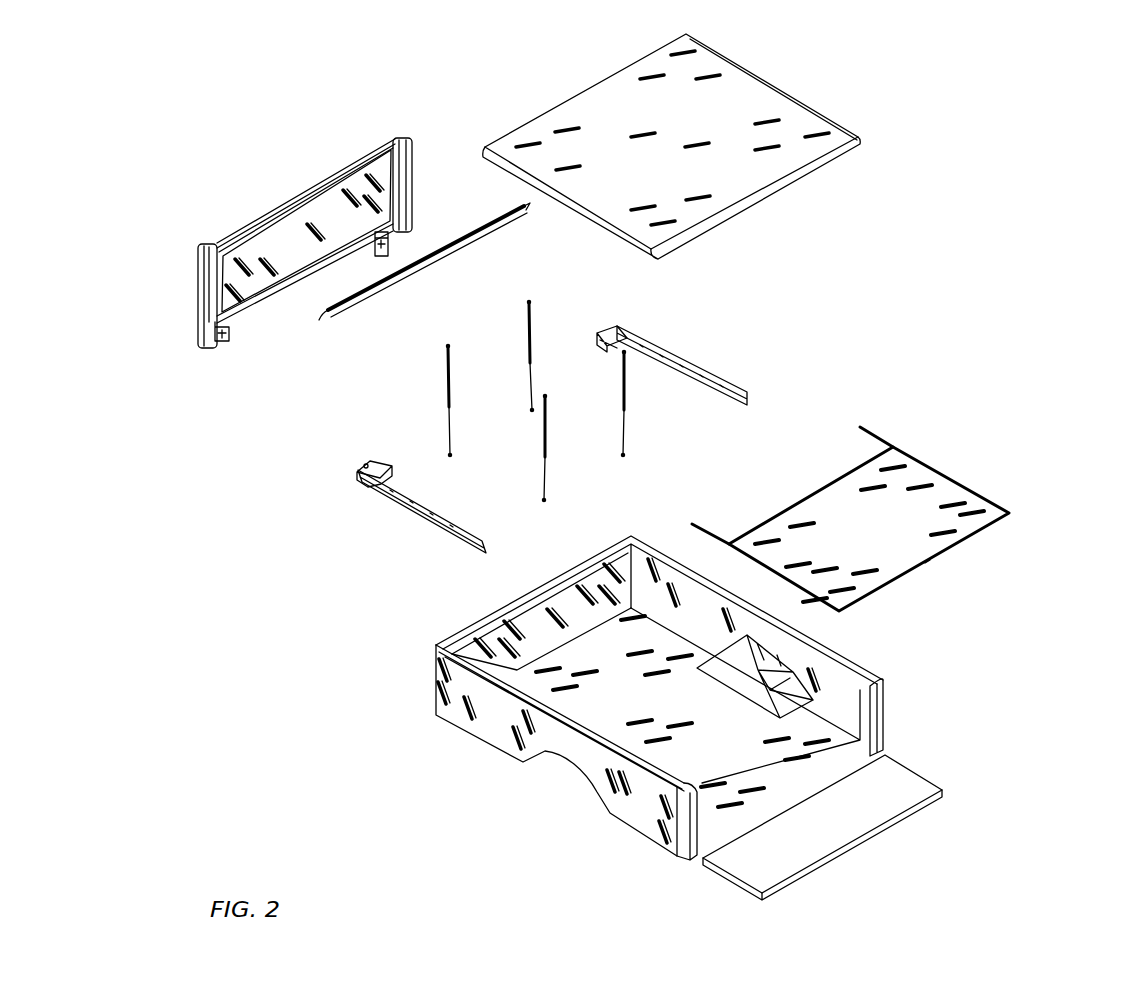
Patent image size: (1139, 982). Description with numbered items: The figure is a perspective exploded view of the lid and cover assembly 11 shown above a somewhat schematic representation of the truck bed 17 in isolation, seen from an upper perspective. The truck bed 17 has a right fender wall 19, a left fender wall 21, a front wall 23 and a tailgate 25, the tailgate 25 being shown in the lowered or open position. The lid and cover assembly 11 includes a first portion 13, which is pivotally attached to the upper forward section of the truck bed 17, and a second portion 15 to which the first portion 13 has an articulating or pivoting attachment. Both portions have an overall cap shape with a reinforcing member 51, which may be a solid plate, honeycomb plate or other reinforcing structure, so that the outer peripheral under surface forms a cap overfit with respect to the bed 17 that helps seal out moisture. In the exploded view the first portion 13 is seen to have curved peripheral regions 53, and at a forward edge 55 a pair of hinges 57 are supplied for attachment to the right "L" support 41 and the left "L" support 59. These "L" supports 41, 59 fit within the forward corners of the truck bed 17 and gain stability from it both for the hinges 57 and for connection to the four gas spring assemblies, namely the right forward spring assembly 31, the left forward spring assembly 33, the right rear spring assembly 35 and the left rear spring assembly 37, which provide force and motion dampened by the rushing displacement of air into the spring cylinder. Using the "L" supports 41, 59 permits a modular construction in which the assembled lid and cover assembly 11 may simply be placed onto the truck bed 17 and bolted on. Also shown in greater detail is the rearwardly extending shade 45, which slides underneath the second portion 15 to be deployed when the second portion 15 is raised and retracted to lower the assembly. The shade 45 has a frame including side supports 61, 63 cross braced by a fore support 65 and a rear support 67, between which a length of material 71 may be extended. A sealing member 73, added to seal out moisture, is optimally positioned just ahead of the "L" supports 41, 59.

The lid and cover assembly 11 is at (1040, 166).
The first portion 13 is at (307, 185).
The second portion 15 is at (752, 90).
The truck bed 17 is at (488, 722).
The right fender wall 19 is at (832, 690).
The left fender wall 21 is at (655, 815).
The front wall 23 is at (525, 628).
The tailgate 25 is at (868, 818).
The right forward spring assembly 31 is at (533, 345).
The left forward spring assembly 33 is at (448, 363).
The right rear spring assembly 35 is at (628, 407).
The left rear spring assembly 37 is at (548, 480).
The right "L" support 41 is at (705, 375).
The rearwardly extending shade 45 is at (1015, 515).
The reinforcing member 51 is at (267, 237).
The curved peripheral regions 53 is at (403, 176).
The forward edge 55 is at (316, 300).
The hinges 57 is at (388, 250).
The left "L" support 59 is at (413, 515).
The side support 61 is at (830, 610).
The side support 63 is at (985, 495).
The fore support 65 is at (790, 520).
The rear support 67 is at (940, 558).
The length of material 71 is at (880, 505).
The sealing member 73 is at (452, 245).